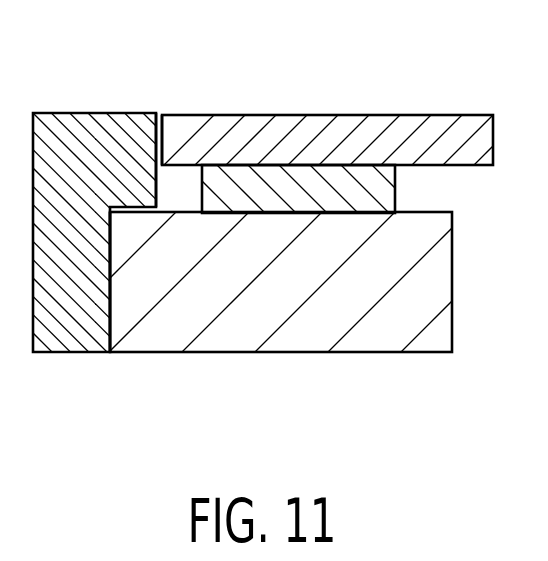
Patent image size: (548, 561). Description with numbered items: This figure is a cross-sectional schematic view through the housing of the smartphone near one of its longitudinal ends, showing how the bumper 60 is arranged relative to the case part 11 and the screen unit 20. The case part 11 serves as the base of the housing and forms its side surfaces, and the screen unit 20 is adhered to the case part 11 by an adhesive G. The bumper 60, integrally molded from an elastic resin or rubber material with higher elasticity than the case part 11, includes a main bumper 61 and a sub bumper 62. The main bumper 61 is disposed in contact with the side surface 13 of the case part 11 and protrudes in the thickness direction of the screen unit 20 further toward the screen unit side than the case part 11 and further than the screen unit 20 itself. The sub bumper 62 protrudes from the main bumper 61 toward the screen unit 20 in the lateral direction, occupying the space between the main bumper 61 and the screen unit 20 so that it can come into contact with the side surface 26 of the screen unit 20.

The bumper 60 is at (195, 188).
The main bumper 61 is at (67, 113).
The sub bumper 62 is at (50, 55).
The side surface of the screen unit 26 is at (160, 118).
The screen unit 20 is at (310, 123).
The adhesive G is at (386, 189).
The case part 11 is at (283, 335).
The side surface of the case part 13 is at (110, 316).